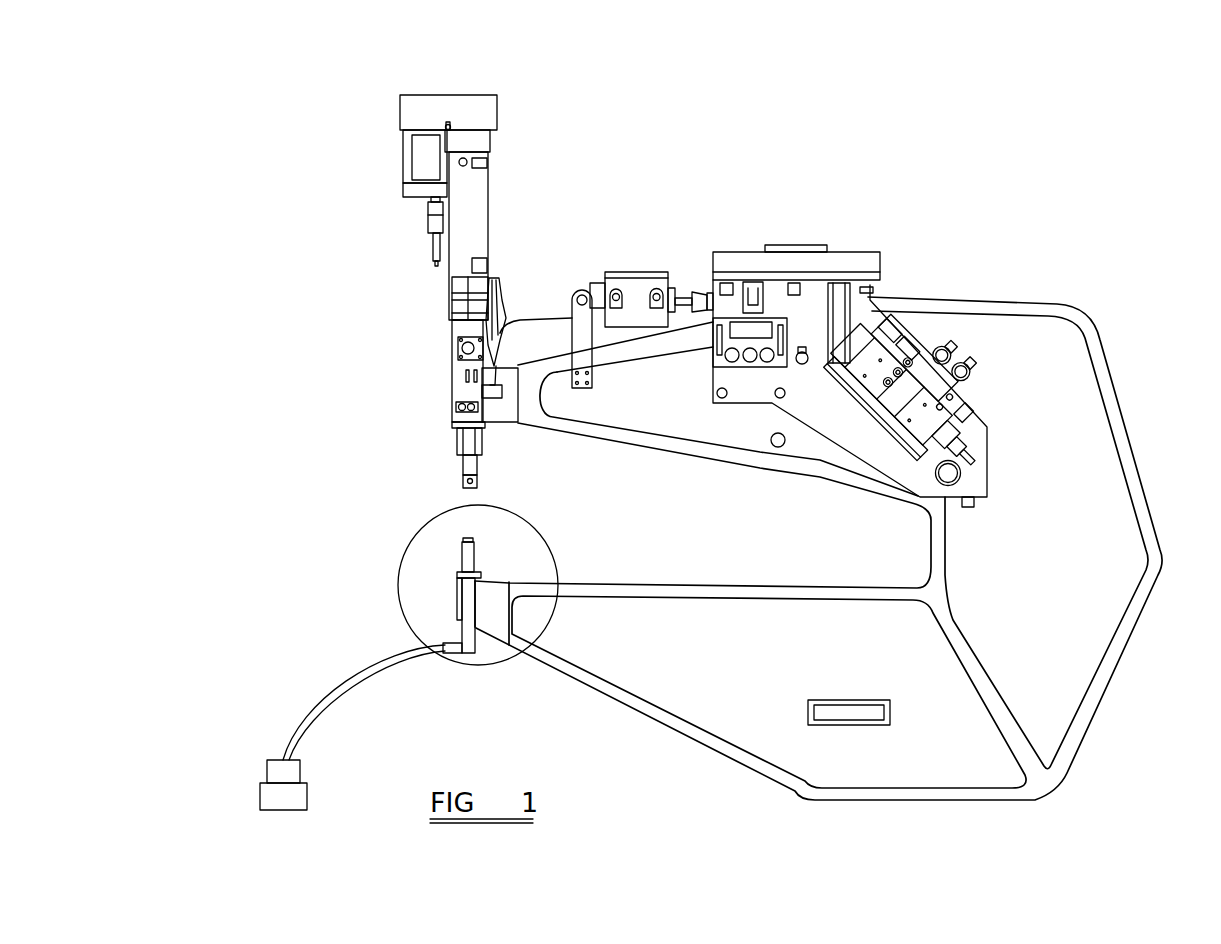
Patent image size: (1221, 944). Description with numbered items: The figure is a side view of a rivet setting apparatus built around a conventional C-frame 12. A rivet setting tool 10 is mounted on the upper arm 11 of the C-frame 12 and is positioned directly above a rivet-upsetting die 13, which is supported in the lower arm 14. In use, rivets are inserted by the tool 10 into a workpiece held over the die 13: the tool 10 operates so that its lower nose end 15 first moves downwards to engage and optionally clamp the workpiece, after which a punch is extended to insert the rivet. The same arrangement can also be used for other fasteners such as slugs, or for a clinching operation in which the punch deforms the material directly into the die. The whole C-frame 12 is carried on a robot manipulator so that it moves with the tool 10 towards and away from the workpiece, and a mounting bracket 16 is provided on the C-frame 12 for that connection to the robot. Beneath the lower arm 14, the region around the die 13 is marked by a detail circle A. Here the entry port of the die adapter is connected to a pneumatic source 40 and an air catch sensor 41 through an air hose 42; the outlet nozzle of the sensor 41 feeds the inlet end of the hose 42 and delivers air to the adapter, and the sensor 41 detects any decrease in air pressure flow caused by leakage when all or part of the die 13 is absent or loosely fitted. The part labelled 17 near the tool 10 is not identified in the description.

The rivet setting tool 10 is at (516, 246).
The upper arm 11 is at (502, 416).
The C-frame 12 is at (1082, 435).
The rivet-upsetting die 13 is at (461, 540).
The lower arm 14 is at (580, 613).
The lower nose end 15 is at (461, 485).
The mounting bracket 16 is at (822, 224).
The cylinder 17 is at (532, 318).
The pneumatic source 40 is at (267, 797).
The air catch sensor 41 is at (292, 770).
The air hose 42 is at (363, 668).
The detail region A is at (497, 667).